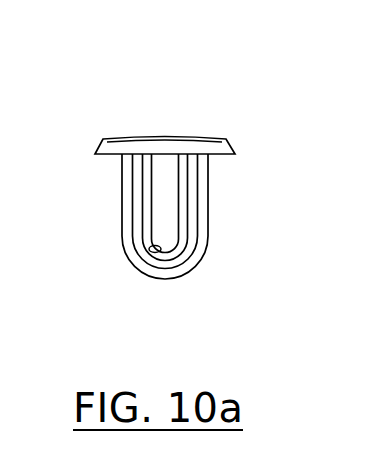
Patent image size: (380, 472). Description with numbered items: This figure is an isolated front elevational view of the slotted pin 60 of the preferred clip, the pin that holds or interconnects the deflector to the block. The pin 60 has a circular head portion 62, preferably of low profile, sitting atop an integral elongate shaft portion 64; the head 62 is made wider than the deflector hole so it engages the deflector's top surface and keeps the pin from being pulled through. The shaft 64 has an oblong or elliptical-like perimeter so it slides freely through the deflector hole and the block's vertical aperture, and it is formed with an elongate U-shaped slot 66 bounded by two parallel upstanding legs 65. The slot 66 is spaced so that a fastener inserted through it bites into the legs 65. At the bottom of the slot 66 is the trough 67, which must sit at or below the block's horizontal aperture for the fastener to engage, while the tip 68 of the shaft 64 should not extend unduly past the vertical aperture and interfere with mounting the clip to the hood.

The slotted pin 60 is at (232, 113).
The circular head portion 62 is at (153, 135).
The elongate shaft portion 64 is at (112, 174).
The upstanding legs 65 is at (130, 218).
The U-shaped slot 66 is at (165, 228).
The trough of the slot 67 is at (156, 248).
The tip of the shaft 68 is at (167, 281).